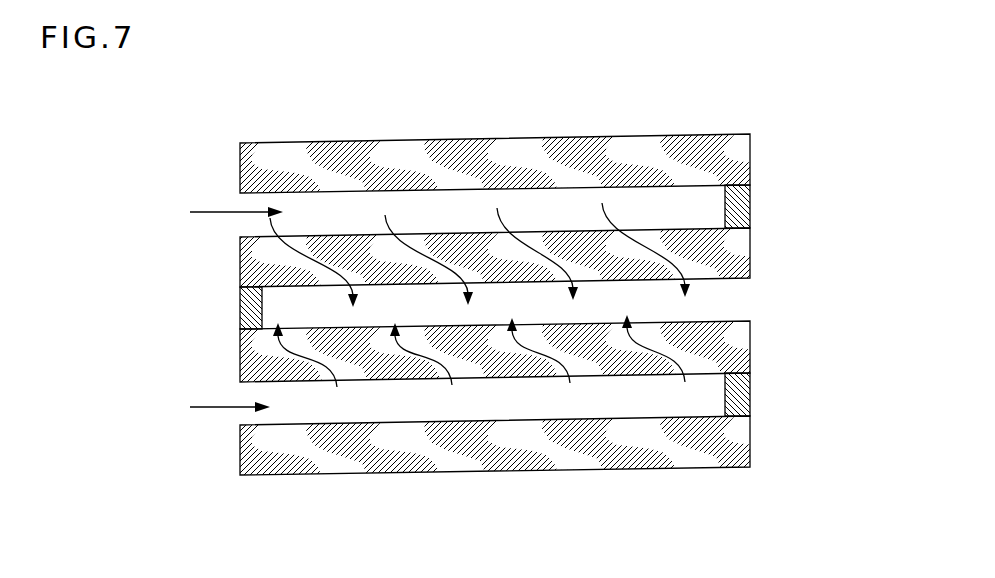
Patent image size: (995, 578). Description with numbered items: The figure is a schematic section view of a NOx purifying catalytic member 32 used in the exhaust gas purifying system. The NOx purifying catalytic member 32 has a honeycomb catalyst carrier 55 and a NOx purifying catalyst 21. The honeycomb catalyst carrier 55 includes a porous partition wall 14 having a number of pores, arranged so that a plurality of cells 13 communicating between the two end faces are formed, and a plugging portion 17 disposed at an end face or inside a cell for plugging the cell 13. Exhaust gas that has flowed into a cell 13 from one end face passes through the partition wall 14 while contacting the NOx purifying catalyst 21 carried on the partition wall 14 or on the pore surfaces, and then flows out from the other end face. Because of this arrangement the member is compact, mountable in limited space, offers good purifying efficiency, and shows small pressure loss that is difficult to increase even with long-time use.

The cell 13 is at (513, 400).
The porous partition wall 14 is at (750, 260).
The plugging portion 17 is at (752, 206).
The NOx purifying catalyst 21 is at (536, 152).
The NOx purifying catalytic member 32 is at (497, 340).
The honeycomb catalyst carrier 55 is at (316, 497).